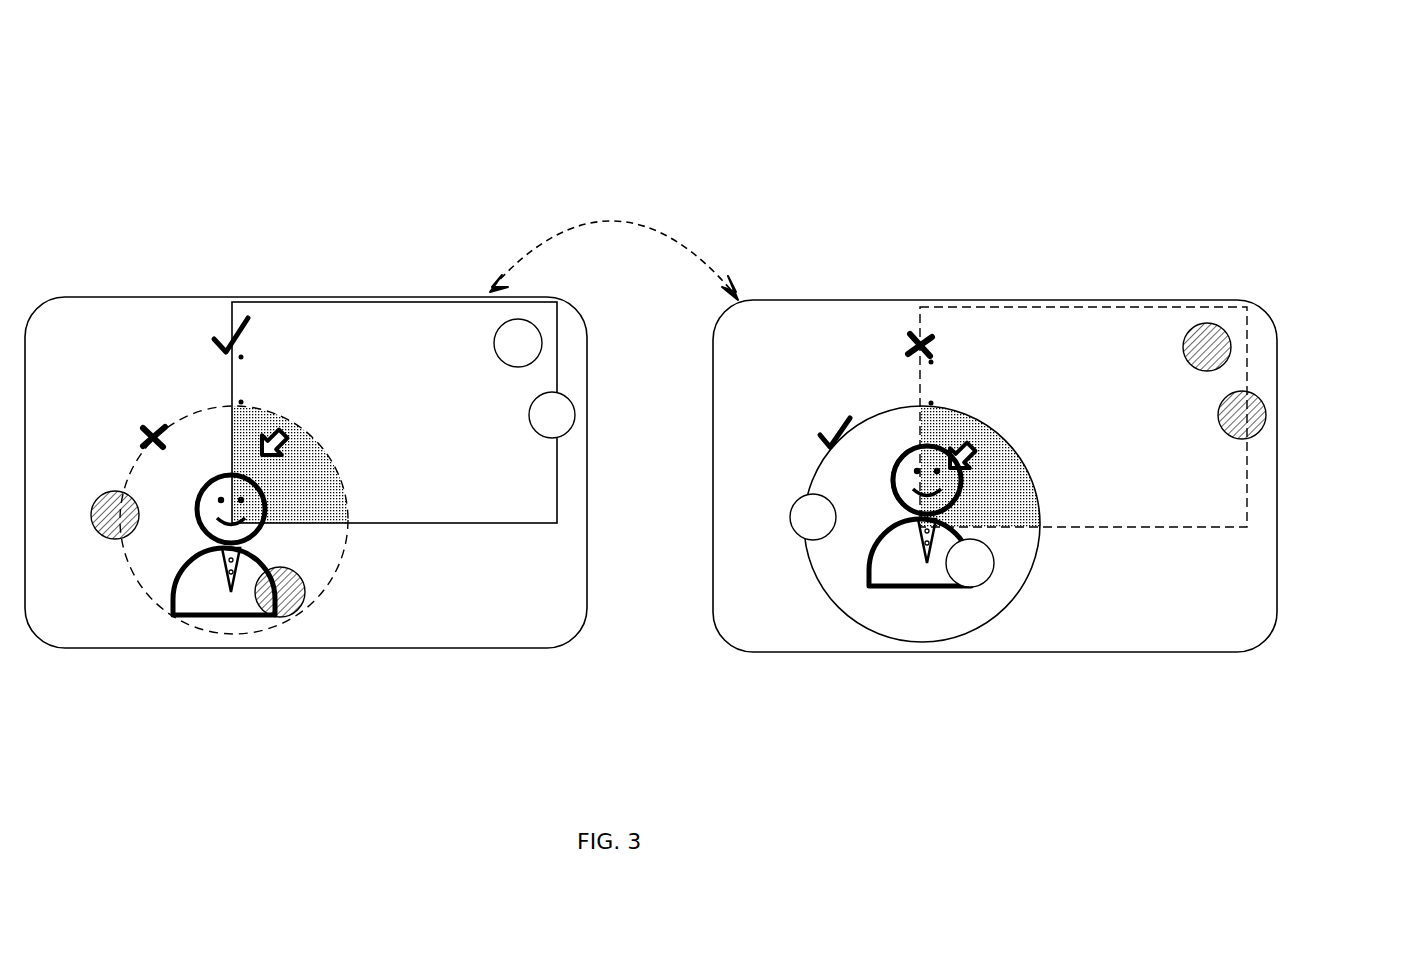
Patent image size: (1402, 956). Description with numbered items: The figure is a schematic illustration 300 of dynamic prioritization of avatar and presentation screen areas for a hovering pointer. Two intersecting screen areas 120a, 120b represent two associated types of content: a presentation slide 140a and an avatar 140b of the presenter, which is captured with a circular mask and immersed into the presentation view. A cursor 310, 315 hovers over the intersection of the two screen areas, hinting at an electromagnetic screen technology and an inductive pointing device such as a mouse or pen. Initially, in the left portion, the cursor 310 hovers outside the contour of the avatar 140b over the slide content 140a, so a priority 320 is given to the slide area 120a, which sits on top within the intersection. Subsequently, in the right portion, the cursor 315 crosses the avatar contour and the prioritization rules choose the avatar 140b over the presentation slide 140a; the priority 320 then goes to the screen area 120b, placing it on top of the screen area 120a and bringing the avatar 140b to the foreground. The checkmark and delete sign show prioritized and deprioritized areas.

The schematic illustration 300 is at (1373, 116).
The slide screen area 120a is at (282, 297).
The avatar screen area 120b is at (123, 562).
The presentation slide 140a is at (420, 338).
The avatar 140b is at (205, 617).
The cursor 310 is at (228, 447).
The cursor 315 is at (920, 447).
The priority 320 is at (460, 527).